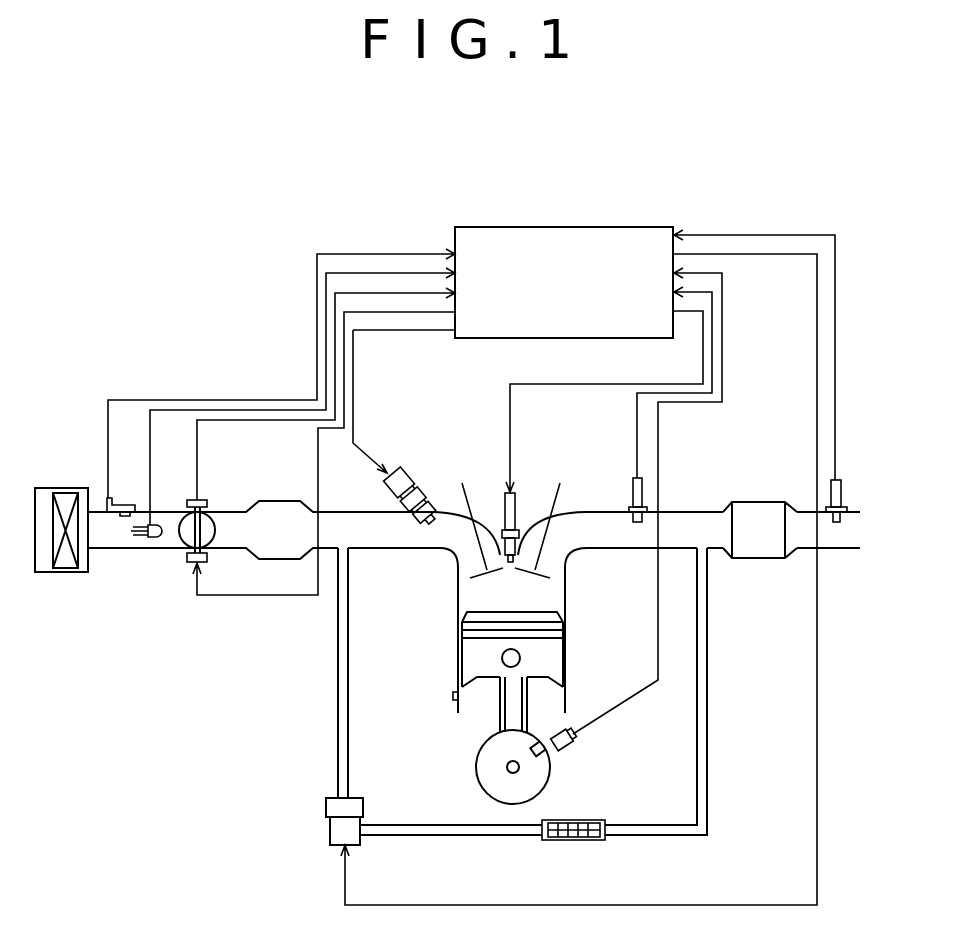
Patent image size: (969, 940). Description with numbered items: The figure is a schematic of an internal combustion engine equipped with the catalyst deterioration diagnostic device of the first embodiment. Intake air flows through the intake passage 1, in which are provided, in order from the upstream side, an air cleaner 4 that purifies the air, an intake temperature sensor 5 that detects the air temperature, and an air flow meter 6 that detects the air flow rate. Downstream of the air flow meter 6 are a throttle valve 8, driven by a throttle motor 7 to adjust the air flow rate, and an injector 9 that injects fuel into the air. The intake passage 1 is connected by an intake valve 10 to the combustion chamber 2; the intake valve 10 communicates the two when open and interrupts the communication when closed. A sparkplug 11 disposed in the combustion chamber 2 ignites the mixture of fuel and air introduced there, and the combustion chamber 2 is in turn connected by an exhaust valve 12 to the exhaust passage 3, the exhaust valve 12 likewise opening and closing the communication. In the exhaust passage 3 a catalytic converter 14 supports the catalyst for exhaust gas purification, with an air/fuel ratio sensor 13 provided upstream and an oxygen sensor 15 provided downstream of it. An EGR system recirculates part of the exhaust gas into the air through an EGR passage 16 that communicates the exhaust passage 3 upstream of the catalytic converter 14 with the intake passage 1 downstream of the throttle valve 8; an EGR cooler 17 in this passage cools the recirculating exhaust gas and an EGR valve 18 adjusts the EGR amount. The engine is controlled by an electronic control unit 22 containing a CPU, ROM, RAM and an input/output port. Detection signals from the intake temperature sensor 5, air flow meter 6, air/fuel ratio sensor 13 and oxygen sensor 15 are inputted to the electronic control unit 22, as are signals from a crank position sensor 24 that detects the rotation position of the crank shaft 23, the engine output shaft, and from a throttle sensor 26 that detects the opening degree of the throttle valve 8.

The intake passage 1 is at (374, 550).
The combustion chamber 2 is at (500, 600).
The exhaust passage 3 is at (628, 550).
The air cleaner 4 is at (63, 572).
The intake temperature sensor 5 is at (125, 498).
The air flow meter 6 is at (145, 548).
The throttle motor 7 is at (189, 566).
The throttle valve 8 is at (215, 530).
The injector 9 is at (384, 483).
The intake valve 10 is at (479, 550).
The sparkplug 11 is at (518, 505).
The exhaust valve 12 is at (548, 550).
The air/fuel ratio sensor 13 is at (629, 501).
The catalytic converter 14 is at (756, 559).
The oxygen sensor 15 is at (847, 491).
The EGR passage 16 is at (665, 820).
The EGR cooler 17 is at (575, 841).
The EGR valve 18 is at (326, 830).
The electronic control unit 22 is at (491, 225).
The crank shaft 23 is at (506, 767).
The crank position sensor 24 is at (574, 748).
The throttle sensor 26 is at (199, 499).